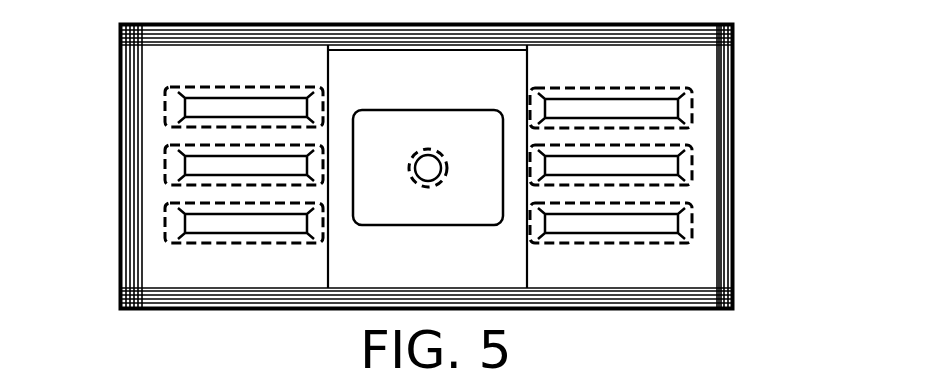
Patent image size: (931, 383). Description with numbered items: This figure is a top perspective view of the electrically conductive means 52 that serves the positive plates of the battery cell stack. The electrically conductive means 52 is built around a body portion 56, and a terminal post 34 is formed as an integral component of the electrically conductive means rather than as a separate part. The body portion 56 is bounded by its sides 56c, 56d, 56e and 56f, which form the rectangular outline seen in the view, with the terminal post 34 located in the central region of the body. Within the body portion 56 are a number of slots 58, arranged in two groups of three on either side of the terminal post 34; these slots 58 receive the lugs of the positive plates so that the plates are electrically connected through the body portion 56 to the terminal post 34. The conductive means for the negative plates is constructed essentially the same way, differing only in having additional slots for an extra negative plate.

The electrically conductive means 52 is at (115, 342).
The terminal post 34 is at (390, 217).
The body portion 56 is at (541, 283).
The side 56c is at (712, 23).
The side 56d is at (730, 98).
The side 56e is at (707, 310).
The side 56f is at (120, 175).
The slots 58 is at (203, 220).